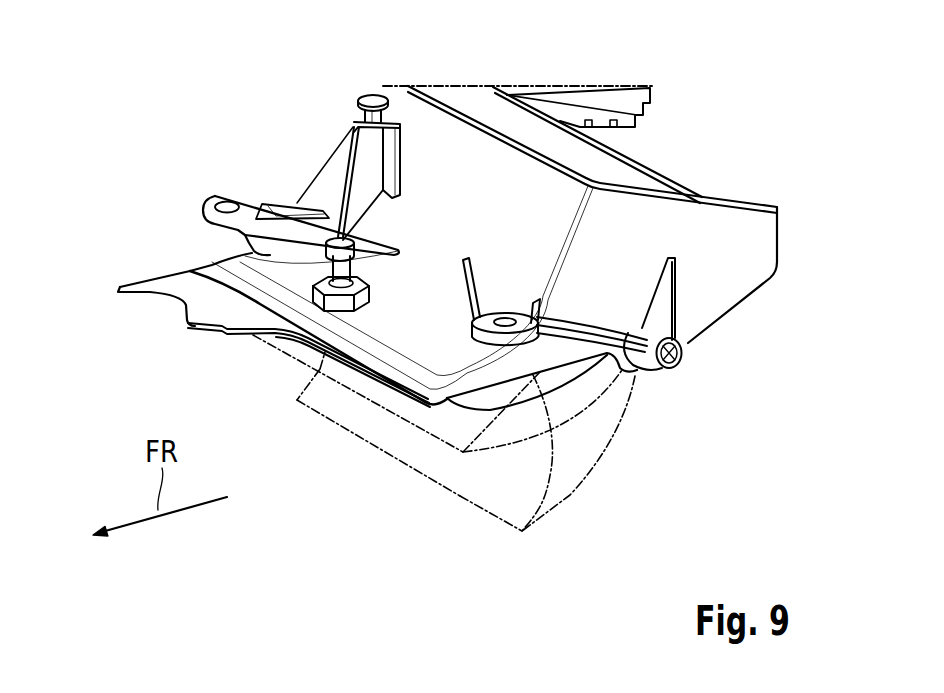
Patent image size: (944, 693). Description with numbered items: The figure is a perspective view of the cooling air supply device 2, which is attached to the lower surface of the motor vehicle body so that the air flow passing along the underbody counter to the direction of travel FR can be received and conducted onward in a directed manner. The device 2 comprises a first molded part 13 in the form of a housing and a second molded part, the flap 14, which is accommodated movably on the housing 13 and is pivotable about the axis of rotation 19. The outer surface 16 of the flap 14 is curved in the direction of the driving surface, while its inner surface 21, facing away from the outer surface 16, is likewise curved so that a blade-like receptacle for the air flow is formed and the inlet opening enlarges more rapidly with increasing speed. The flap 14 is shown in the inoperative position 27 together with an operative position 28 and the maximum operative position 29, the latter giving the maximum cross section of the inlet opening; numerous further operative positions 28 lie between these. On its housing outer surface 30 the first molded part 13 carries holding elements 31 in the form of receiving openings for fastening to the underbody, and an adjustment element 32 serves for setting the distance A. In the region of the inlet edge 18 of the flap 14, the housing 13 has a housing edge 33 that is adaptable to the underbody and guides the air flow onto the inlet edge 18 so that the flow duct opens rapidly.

The cooling air supply device 2 is at (710, 95).
The first molded part 13 is at (738, 222).
The flap 14 is at (607, 418).
The outer surface 16 is at (620, 447).
The inlet edge 18 is at (343, 432).
The axis of rotation 19 is at (684, 347).
The inner surface 21 is at (550, 474).
The inoperative position 27 is at (452, 415).
The operative position 28 is at (475, 468).
The maximum operative position 29 is at (522, 548).
The housing outer surface 30 is at (474, 164).
The holding elements 31 is at (229, 206).
The adjustment element 32 is at (337, 238).
The housing edge 33 is at (148, 295).